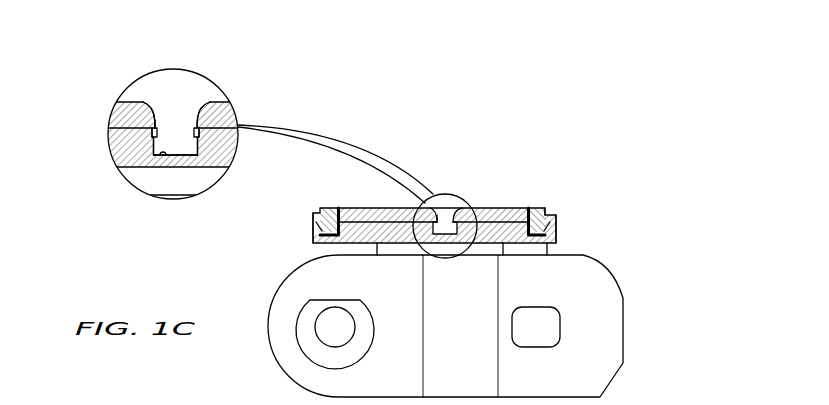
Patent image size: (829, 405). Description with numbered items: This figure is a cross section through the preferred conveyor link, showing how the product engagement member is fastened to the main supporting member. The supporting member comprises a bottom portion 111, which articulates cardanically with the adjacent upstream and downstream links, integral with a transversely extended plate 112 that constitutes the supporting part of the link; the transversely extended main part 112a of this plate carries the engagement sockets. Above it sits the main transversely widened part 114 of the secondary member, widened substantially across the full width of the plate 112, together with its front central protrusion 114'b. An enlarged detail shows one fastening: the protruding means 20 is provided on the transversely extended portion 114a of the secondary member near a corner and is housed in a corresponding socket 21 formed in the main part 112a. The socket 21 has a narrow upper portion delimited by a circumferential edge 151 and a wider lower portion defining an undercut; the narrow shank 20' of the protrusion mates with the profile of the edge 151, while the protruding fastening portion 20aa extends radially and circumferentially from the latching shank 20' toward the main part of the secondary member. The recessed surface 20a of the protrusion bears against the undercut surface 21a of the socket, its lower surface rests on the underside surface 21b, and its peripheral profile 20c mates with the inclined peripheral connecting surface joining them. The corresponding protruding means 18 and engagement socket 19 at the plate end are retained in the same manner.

The bottom portion 111 is at (631, 329).
The transversely extended plate 112 is at (560, 233).
The transversely extended main part of the plate 112a is at (722, 400).
The main transversely widened part 114 is at (488, 176).
The transversely extended portion 114a is at (123, 118).
The central protrusion 114'b is at (589, 175).
The protruding means 18 is at (330, 208).
The engagement socket 19 is at (313, 222).
The circumferential edge 151 is at (160, 128).
The protruding means 20 is at (302, 121).
The narrow shank 20' is at (298, 106).
The recessed surface 20a is at (150, 127).
The protruding fastening portion 20aa is at (195, 150).
The peripheral profile 20c is at (123, 170).
The socket 21 is at (175, 154).
The undercut surface 21a is at (150, 144).
The underside surface 21b is at (160, 153).